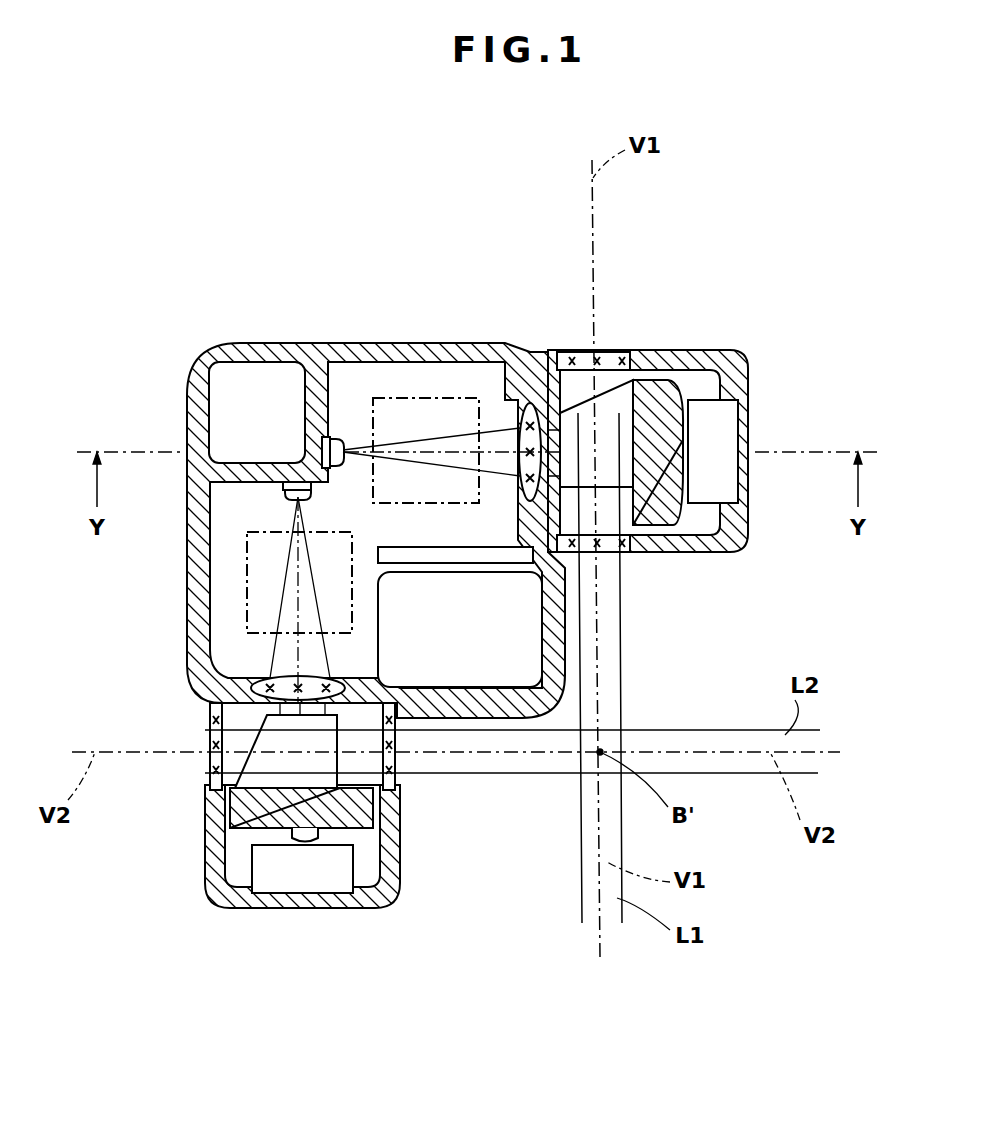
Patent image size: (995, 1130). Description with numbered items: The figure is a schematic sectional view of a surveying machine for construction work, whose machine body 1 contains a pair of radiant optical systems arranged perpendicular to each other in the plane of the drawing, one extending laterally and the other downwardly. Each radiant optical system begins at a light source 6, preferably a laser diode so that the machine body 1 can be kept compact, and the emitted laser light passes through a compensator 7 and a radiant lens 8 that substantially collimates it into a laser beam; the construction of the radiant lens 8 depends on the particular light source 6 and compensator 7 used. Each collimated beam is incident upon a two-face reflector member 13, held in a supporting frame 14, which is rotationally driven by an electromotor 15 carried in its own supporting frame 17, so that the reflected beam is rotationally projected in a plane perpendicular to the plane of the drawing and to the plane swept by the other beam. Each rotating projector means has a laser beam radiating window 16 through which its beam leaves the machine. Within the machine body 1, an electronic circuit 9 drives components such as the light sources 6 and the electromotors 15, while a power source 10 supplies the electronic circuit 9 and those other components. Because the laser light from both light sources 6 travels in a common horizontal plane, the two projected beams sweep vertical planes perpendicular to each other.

The machine body 1 is at (262, 335).
The light source 6 is at (333, 440).
The compensator 7 is at (432, 400).
The radiant lens 8 is at (517, 410).
The electronic circuit 9 is at (517, 555).
The power source 10 is at (513, 632).
The two-face reflector member 13 is at (638, 405).
The supporting frame for two-face reflector member 14 is at (657, 510).
The electromotor 15 is at (720, 415).
The laser beam radiating window 16 is at (608, 350).
The supporting frame for electromotor 17 is at (747, 537).